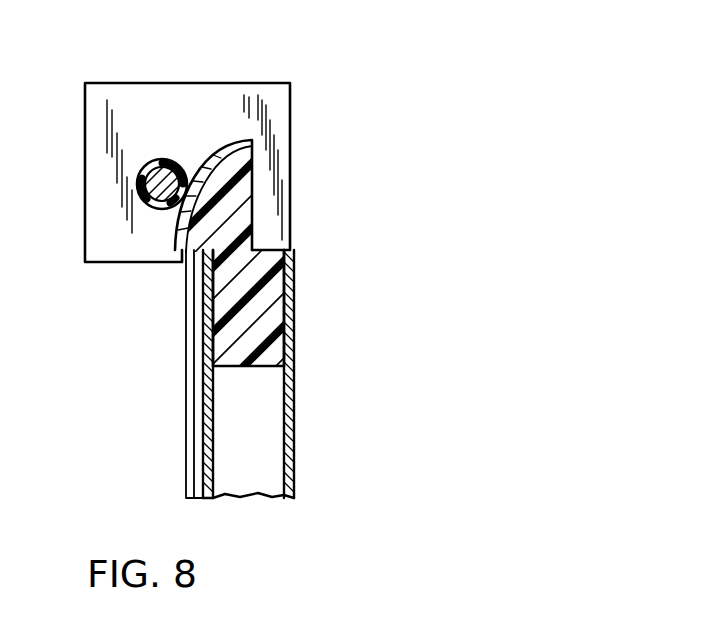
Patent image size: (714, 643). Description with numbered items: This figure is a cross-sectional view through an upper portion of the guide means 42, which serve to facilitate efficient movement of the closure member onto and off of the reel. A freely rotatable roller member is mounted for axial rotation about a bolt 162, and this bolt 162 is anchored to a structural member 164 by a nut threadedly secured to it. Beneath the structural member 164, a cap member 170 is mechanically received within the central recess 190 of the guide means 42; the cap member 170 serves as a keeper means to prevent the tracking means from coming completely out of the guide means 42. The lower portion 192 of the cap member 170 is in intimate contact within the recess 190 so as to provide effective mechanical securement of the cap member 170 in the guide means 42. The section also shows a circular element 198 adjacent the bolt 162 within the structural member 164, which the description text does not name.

The structural member 164 is at (237, 98).
The cap member 170 is at (258, 217).
The sheath ring 198 is at (160, 160).
The bolt 162 is at (158, 212).
The lower portion 192 is at (264, 300).
The guide means 42 is at (297, 357).
The central recess 190 is at (276, 442).